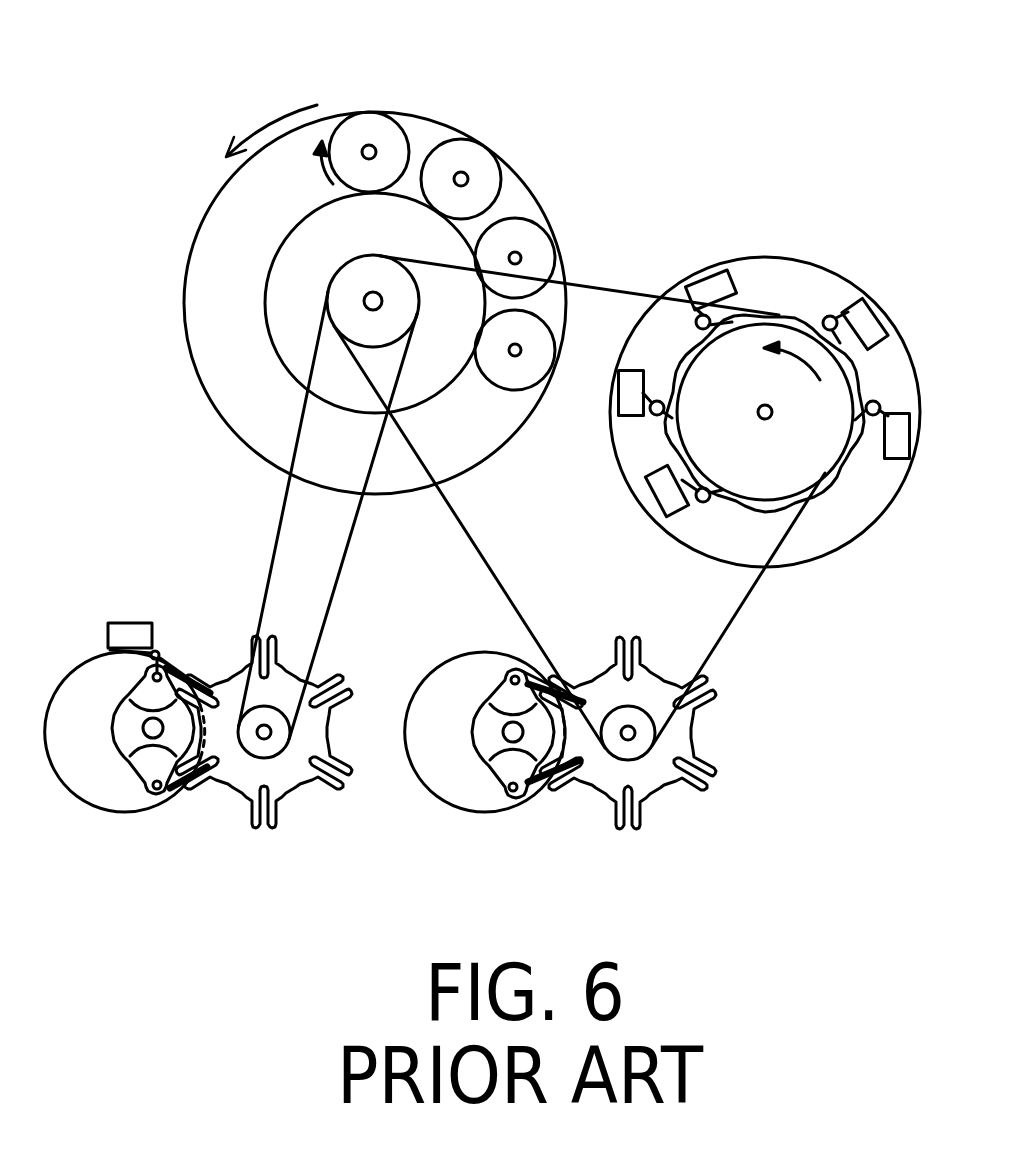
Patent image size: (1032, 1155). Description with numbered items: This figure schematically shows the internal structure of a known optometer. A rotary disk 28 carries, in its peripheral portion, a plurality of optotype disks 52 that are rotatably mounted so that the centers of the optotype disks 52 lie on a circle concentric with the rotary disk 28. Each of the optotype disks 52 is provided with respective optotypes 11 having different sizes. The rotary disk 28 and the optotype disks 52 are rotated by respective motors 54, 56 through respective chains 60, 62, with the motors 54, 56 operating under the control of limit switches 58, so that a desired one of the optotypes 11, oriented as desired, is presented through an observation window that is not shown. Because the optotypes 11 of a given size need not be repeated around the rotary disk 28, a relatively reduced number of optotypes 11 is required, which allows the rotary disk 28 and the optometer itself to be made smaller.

The rotary disk 28 is at (190, 193).
The optotypes 11 is at (372, 153).
The optotype disks 52 is at (388, 128).
The motor 54 is at (108, 790).
The motor 56 is at (487, 788).
The limit switches 58 is at (712, 275).
The chain 60 is at (272, 557).
The chain 62 is at (740, 619).